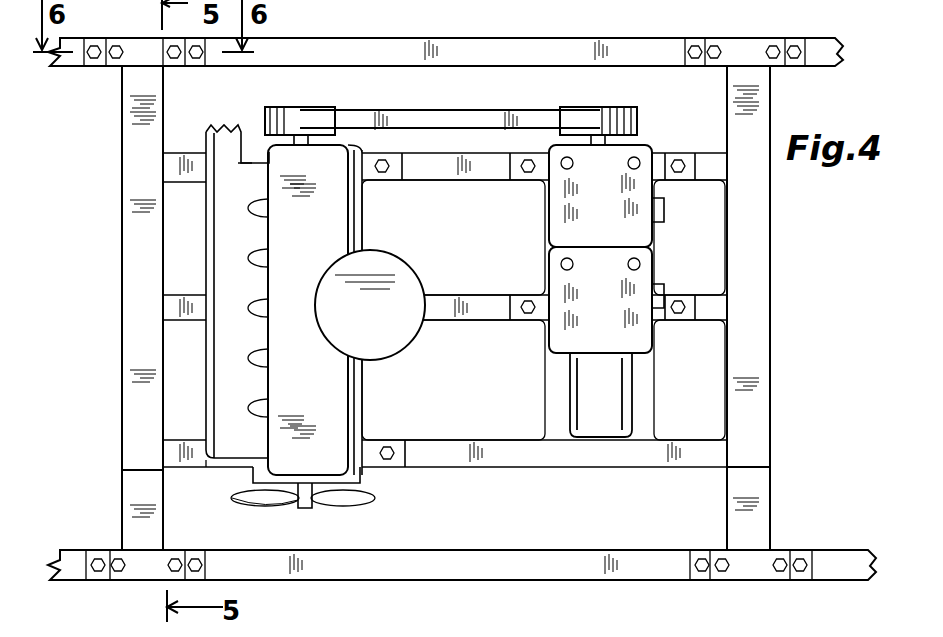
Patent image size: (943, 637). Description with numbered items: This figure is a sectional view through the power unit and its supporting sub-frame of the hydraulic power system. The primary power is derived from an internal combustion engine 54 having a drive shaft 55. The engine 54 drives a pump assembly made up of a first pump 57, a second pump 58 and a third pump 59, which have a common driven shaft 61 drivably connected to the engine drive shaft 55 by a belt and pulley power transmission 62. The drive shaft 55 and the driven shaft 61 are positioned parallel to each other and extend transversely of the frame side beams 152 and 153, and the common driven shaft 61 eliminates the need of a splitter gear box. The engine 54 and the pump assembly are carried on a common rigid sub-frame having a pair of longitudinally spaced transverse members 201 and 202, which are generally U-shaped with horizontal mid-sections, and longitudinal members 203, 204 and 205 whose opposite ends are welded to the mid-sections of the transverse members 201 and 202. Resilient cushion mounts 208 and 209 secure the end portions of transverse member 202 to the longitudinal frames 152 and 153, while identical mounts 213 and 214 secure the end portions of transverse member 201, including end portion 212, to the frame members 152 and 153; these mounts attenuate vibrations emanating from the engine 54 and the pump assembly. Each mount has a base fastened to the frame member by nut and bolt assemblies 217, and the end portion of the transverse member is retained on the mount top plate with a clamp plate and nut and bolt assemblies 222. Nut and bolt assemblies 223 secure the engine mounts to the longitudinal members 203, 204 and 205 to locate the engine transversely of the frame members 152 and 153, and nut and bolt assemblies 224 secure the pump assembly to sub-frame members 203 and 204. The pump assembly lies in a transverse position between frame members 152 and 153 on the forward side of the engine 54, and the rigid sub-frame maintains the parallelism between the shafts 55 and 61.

The internal combustion engine 54 is at (314, 237).
The drive shaft 55 is at (310, 134).
The first pump 57 is at (612, 212).
The second pump 58 is at (612, 312).
The third pump 59 is at (610, 392).
The driven shaft 61 is at (608, 142).
The belt and pulley power transmission 62 is at (432, 120).
The frame side beam 152 is at (445, 46).
The frame side beam 153 is at (452, 558).
The transverse member 201 is at (770, 295).
The transverse member 202 is at (128, 292).
The longitudinal member 203 is at (472, 166).
The longitudinal member 204 is at (476, 320).
The longitudinal member 205 is at (463, 448).
The mount 208 is at (137, 46).
The mount 209 is at (148, 580).
The end portion 212 is at (764, 548).
The mount 213 is at (743, 46).
The mount 214 is at (755, 580).
The nut and bolt assembly 217 is at (94, 60).
The nut and bolt assembly 222 is at (174, 60).
The nut and bolt assembly 223 is at (382, 173).
The nut and bolt assembly 224 is at (528, 173).